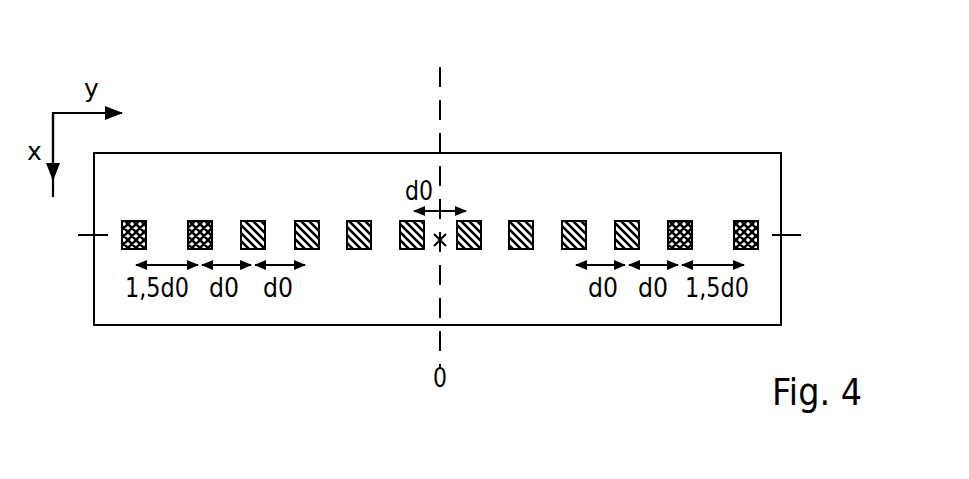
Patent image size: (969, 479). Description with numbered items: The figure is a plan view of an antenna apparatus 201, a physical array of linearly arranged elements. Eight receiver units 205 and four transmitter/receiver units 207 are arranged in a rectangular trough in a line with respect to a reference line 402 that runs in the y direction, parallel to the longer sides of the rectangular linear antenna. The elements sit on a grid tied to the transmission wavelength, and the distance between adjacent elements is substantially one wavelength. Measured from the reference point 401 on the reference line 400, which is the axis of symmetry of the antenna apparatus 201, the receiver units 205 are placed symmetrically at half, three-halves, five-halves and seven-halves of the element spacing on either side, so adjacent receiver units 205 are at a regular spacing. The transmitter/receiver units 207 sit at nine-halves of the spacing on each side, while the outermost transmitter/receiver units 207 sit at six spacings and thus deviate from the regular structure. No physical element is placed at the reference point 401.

The antenna apparatus 201 is at (782, 172).
The receiver unit 205 is at (558, 347).
The transmitter/receiver unit 207 is at (773, 108).
The reference line 400 is at (442, 127).
The reference point 401 is at (442, 252).
The reference line 402 is at (85, 240).